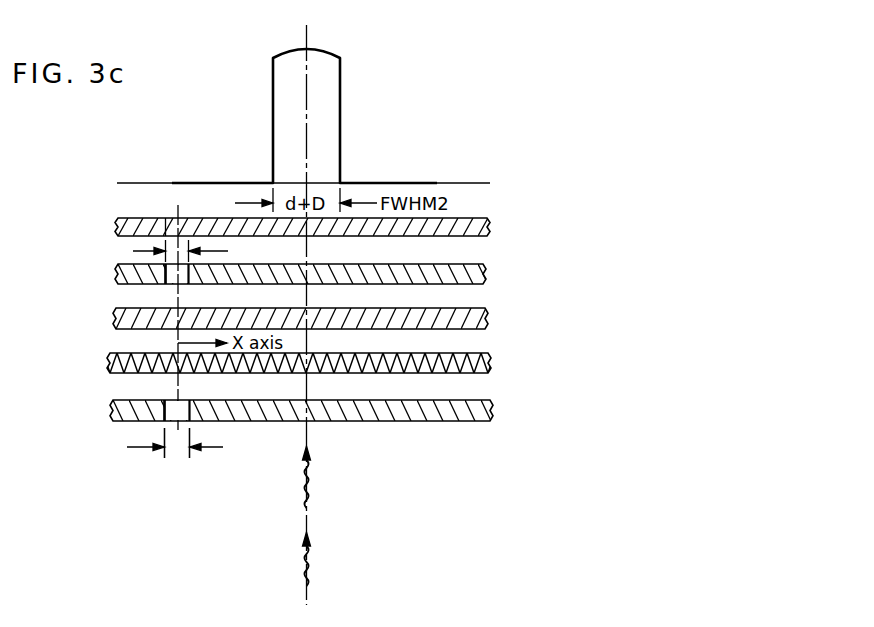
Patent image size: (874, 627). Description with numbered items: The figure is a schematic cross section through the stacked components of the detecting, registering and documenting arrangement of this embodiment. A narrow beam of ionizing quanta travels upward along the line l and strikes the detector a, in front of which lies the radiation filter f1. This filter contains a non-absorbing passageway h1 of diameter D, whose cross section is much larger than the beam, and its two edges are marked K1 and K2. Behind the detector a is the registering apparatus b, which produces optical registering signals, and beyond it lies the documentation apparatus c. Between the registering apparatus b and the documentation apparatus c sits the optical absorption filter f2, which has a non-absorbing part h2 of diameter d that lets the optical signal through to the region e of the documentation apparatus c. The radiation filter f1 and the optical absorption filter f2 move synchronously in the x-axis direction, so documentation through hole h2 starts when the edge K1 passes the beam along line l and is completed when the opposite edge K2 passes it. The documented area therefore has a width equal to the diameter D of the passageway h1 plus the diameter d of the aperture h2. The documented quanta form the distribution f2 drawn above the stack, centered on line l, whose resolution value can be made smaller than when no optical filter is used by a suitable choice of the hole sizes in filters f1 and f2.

The optical absorption filter f2 is at (340, 101).
The documentation apparatus c is at (497, 224).
The region of documentation apparatus e is at (173, 229).
The aperture diameter d is at (180, 251).
The non-absorbing part h2 is at (172, 283).
The registering apparatus b is at (502, 317).
The detector a is at (505, 363).
The radiation filter f1 is at (500, 411).
The non-absorbing passageway h1 is at (165, 421).
The passageway diameter D is at (175, 443).
The opposite edge of passageway K2 is at (167, 461).
The edge of passageway K1 is at (202, 461).
The line of incident beam l is at (307, 444).